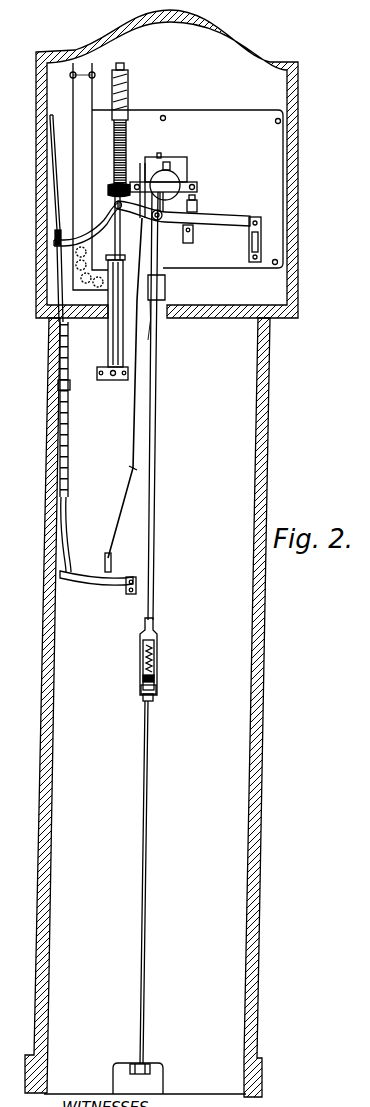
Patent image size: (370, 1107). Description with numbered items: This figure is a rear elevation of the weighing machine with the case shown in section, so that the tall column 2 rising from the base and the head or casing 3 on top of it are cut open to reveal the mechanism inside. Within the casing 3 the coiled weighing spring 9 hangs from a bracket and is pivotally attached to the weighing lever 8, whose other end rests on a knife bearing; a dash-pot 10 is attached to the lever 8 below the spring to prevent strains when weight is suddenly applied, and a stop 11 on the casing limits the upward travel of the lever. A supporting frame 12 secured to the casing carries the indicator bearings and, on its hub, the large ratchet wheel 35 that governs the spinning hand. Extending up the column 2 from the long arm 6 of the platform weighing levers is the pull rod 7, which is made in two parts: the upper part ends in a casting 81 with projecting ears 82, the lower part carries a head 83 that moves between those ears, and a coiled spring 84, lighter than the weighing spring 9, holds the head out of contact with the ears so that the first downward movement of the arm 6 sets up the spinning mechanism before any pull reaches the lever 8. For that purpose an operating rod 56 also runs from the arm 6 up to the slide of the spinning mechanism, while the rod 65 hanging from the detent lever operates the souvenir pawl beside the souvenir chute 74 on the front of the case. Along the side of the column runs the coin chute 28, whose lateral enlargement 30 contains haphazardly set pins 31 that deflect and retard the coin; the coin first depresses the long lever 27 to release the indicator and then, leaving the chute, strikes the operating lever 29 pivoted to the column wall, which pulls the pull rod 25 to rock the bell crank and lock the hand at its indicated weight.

The column 2 is at (259, 847).
The head or casing 3 is at (274, 62).
The long arm of the weighing levers 6 is at (152, 1063).
The pull rod 7 is at (147, 813).
The weighing lever 8 is at (235, 216).
The coiled weighing spring 9 is at (128, 103).
The dash-pot 10 is at (108, 340).
The stop 11 is at (197, 203).
The supporting frame 12 is at (197, 187).
The pull rod 25 is at (135, 418).
The long lever 27 is at (54, 243).
The coin chute 28 is at (50, 192).
The operating lever 29 is at (98, 580).
The lateral enlargement 30 is at (58, 408).
The pins 31 is at (55, 380).
The large ratchet wheel 35 is at (187, 173).
The operating rod 56 is at (160, 392).
The rod 65 is at (165, 279).
The way or chute 74 is at (83, 129).
The casting 81 is at (157, 638).
The projecting ears 82 is at (140, 692).
The head 83 is at (154, 677).
The coiled spring 84 is at (144, 658).